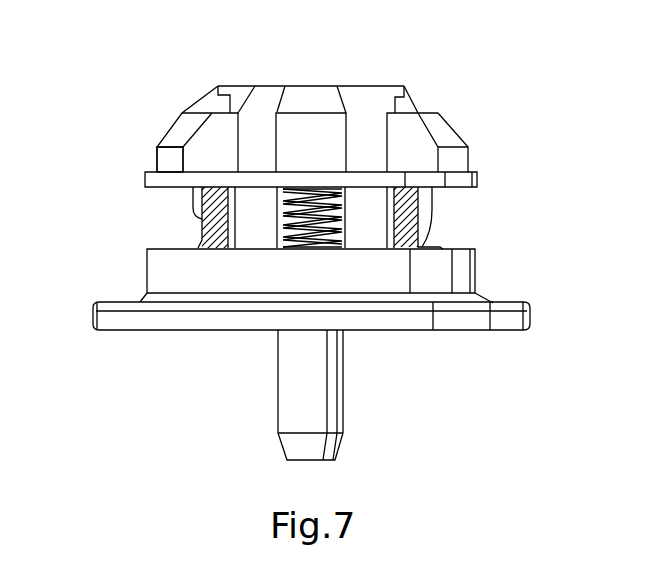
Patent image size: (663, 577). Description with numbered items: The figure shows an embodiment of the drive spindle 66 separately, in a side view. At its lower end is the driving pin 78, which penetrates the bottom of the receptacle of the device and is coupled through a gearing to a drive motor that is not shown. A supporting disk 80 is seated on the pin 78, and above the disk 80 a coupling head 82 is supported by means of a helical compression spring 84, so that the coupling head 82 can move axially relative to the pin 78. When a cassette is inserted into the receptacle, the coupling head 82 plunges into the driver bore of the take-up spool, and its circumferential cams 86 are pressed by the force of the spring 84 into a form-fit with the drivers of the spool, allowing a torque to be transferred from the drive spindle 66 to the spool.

The drive spindle 66 is at (410, 88).
The coupling head 82 is at (218, 86).
The circumferential cams 86 is at (157, 147).
The helical compression spring 84 is at (357, 218).
The supporting disk 80 is at (92, 312).
The driving pin 78 is at (345, 422).